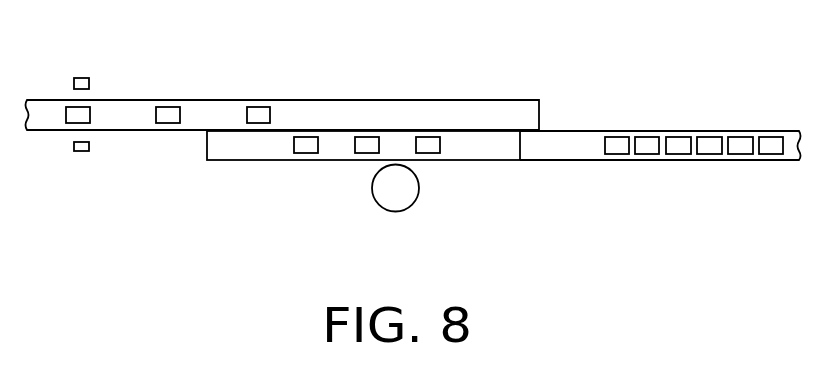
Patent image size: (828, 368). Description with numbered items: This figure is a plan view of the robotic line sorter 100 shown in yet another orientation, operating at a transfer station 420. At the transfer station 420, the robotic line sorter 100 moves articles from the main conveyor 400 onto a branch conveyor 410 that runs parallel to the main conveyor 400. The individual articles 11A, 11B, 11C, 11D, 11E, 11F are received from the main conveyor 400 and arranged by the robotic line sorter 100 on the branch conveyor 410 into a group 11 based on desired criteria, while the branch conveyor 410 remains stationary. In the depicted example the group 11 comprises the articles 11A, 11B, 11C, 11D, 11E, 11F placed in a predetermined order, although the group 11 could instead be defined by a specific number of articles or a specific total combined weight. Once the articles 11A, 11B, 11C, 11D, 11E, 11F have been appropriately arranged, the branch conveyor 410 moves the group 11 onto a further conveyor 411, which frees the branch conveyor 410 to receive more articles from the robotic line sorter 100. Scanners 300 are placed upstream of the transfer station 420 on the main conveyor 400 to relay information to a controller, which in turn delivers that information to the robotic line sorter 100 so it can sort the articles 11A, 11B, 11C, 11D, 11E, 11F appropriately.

The group 11 is at (668, 70).
The article 11A is at (303, 153).
The article 11B is at (75, 123).
The article 11C is at (363, 153).
The article 11D is at (168, 123).
The article 11E is at (740, 137).
The article 11F is at (258, 107).
The robotic line sorter 100 is at (383, 207).
The scanner 300 is at (81, 78).
The main conveyor 400 is at (377, 100).
The branch conveyor 410 is at (492, 160).
The conveyor 411 is at (555, 137).
The transfer station 420 is at (410, 215).